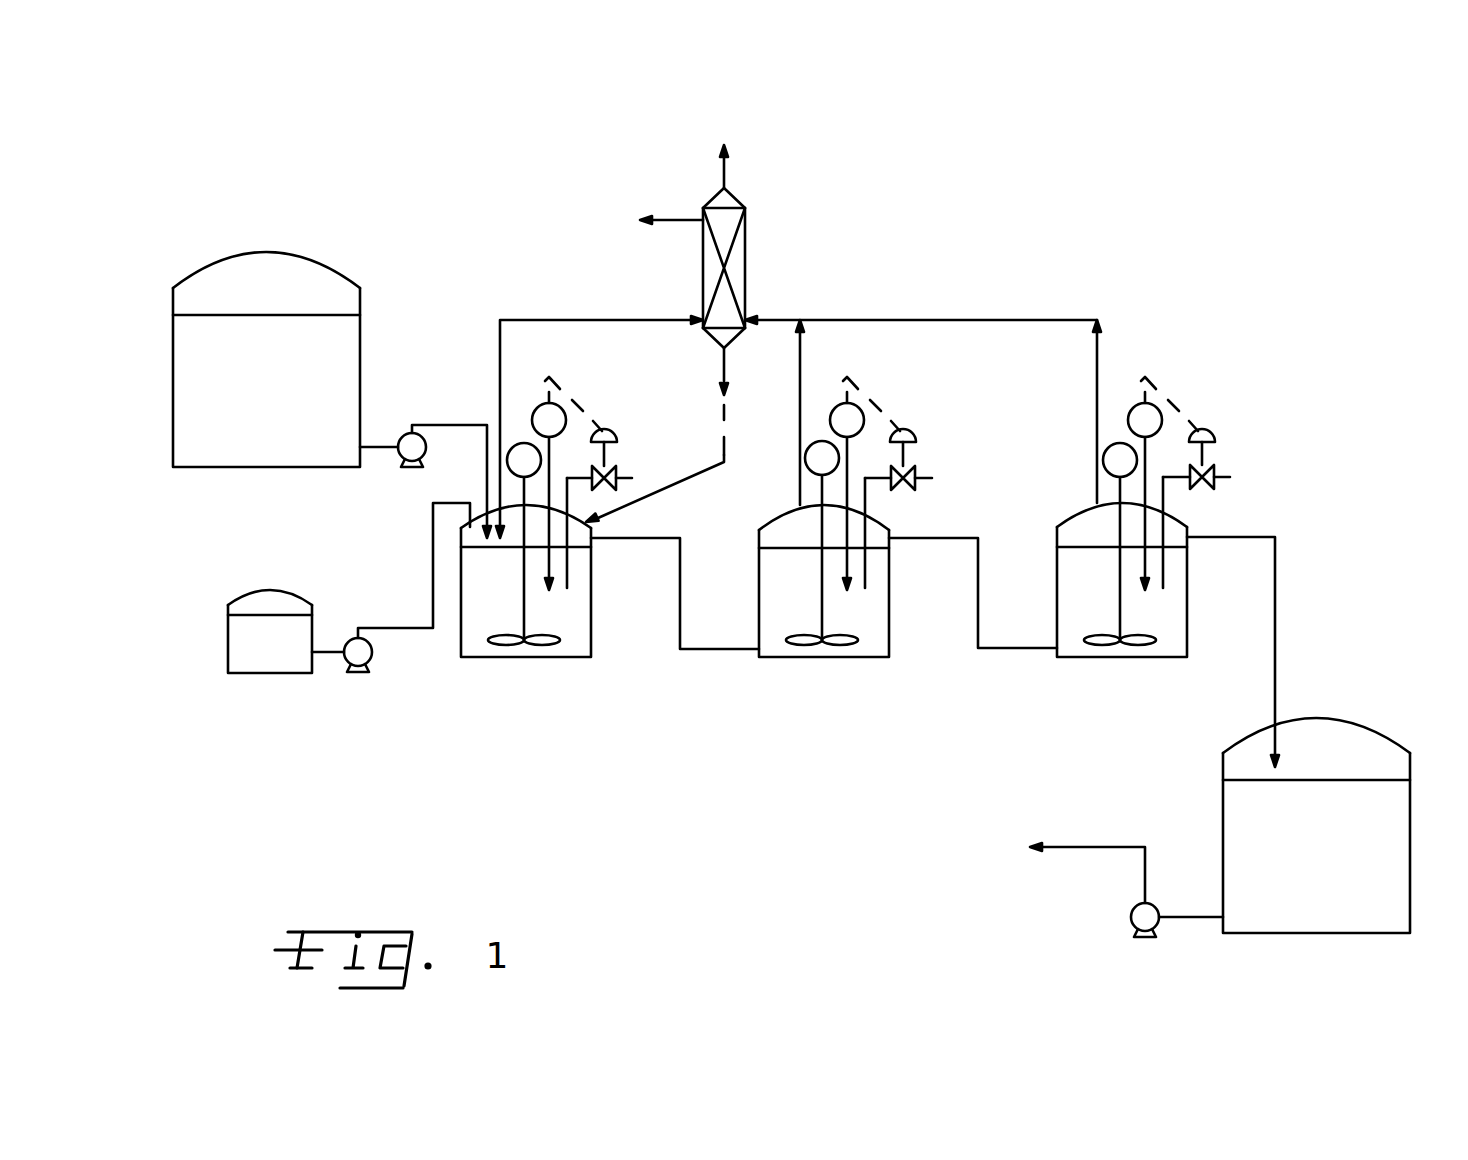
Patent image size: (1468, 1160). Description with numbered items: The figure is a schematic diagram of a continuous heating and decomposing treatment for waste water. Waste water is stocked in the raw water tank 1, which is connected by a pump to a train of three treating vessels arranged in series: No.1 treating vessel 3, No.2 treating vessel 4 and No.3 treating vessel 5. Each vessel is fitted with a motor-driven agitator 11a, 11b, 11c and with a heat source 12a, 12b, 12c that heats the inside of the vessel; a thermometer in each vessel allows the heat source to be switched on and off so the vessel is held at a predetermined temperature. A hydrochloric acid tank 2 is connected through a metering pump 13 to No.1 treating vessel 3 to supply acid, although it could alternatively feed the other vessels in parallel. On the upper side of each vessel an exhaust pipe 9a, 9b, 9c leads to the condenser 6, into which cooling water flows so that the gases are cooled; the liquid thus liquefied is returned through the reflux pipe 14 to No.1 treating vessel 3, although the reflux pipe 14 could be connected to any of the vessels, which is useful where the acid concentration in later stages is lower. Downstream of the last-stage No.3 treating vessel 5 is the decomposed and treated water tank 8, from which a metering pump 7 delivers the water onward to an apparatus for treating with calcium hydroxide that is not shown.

The raw water tank 1 is at (348, 284).
The hydrochloric acid tank 2 is at (228, 642).
The No.1 treating vessel 3 is at (609, 660).
The No.2 treating vessel 4 is at (908, 656).
The No.3 treating vessel 5 is at (1201, 636).
The condenser 6 is at (741, 204).
The metering pump 7 is at (390, 664).
The decomposed and treated water tank 8 is at (1402, 847).
The exhaust pipe 9a is at (500, 351).
The exhaust pipe 9b is at (800, 356).
The exhaust pipe 9c is at (1097, 383).
The agitator 11a is at (550, 637).
The agitator 11b is at (795, 635).
The agitator 11c is at (1100, 641).
The heat source 12a is at (582, 350).
The heat source 12b is at (968, 369).
The heat source 12c is at (1228, 333).
The metering pump 13 is at (1131, 917).
The reflux pipe 14 is at (724, 456).